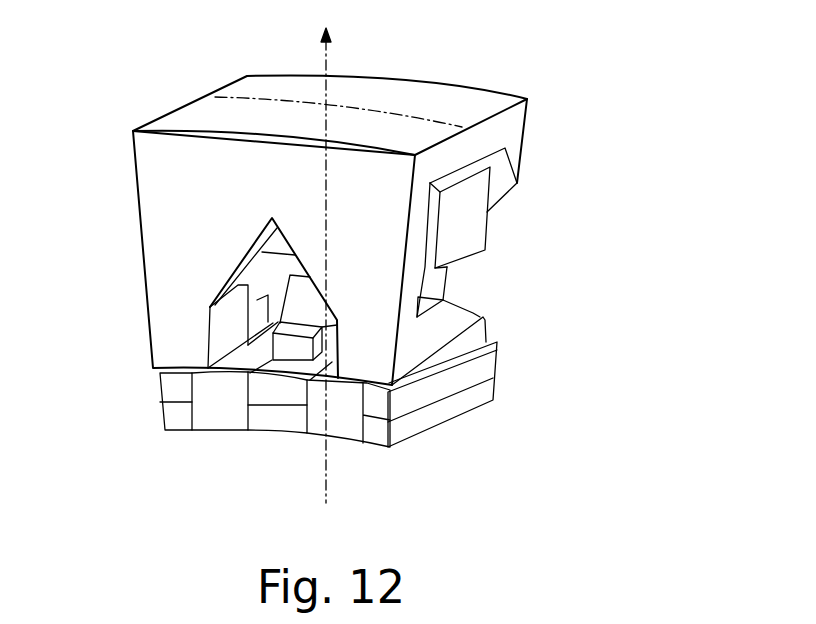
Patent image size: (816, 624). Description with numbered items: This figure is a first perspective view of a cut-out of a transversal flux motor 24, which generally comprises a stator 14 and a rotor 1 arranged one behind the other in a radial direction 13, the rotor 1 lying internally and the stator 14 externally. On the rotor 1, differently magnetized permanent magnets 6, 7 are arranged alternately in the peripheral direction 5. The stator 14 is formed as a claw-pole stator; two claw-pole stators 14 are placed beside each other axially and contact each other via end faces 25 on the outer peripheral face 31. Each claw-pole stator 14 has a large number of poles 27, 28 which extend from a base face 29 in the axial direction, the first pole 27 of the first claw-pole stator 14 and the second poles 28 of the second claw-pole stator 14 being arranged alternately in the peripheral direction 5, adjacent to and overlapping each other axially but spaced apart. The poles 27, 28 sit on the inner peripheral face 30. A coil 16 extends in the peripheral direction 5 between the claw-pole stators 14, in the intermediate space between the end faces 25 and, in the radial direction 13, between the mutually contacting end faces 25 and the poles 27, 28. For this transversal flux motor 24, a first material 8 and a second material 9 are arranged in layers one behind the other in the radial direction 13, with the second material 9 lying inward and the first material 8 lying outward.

The rotor 1 is at (422, 443).
The peripheral direction 5 is at (518, 86).
The permanent magnet 6 is at (342, 427).
The permanent magnet 7 is at (217, 413).
The first material 8 is at (265, 393).
The second material 9 is at (277, 422).
The radial direction 13 is at (345, 261).
The stator 14 is at (541, 218).
The coil 16 is at (275, 242).
The transversal flux motor 24 is at (564, 124).
The end face 25 is at (288, 97).
The first pole 27 is at (253, 316).
The second pole 28 is at (303, 353).
The base face 29 is at (227, 203).
The inner peripheral face 30 is at (450, 360).
The outer peripheral face 31 is at (505, 108).